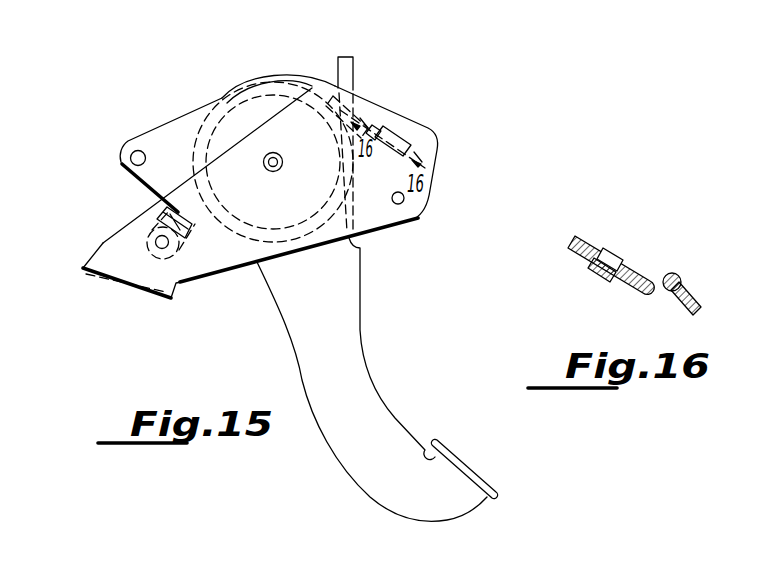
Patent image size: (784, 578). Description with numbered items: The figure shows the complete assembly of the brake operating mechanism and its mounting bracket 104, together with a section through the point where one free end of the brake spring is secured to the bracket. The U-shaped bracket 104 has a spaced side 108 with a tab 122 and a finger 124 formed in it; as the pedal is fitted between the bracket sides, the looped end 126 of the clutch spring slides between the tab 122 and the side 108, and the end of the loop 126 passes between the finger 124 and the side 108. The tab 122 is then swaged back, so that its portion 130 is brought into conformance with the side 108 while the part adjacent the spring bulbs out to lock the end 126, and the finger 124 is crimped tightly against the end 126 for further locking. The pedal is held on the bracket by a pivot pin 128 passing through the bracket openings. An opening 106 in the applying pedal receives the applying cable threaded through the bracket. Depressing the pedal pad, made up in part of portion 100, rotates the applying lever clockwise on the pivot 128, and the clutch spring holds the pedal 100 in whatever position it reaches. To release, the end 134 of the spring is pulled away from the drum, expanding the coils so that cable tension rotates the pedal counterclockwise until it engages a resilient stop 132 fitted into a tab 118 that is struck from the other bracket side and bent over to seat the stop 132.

In FIG. 15, the pedal pad portion 100 is at (450, 452).
In FIG. 15, the mounting plate 104 is at (160, 126).
In FIG. 15, the opening in applying pedal 106 is at (128, 160).
In FIG. 15, the bracket side 108 is at (365, 102).
In FIG. 16, the bracket side 108 is at (577, 239).
In FIG. 15, the tab 118 is at (174, 252).
In FIG. 16, the tab 122 is at (676, 287).
In FIG. 15, the finger 124 is at (397, 128).
In FIG. 16, the finger 124 is at (598, 281).
In FIG. 16, the looped end of spring 126 is at (635, 255).
In FIG. 15, the pivot pin 128 is at (271, 150).
In FIG. 15, the portion of tab 130 is at (430, 132).
In FIG. 15, the resilient stop 132 is at (191, 224).
In FIG. 15, the end of spring 134 is at (353, 62).